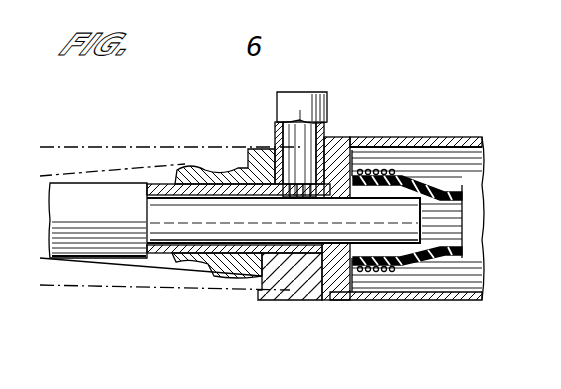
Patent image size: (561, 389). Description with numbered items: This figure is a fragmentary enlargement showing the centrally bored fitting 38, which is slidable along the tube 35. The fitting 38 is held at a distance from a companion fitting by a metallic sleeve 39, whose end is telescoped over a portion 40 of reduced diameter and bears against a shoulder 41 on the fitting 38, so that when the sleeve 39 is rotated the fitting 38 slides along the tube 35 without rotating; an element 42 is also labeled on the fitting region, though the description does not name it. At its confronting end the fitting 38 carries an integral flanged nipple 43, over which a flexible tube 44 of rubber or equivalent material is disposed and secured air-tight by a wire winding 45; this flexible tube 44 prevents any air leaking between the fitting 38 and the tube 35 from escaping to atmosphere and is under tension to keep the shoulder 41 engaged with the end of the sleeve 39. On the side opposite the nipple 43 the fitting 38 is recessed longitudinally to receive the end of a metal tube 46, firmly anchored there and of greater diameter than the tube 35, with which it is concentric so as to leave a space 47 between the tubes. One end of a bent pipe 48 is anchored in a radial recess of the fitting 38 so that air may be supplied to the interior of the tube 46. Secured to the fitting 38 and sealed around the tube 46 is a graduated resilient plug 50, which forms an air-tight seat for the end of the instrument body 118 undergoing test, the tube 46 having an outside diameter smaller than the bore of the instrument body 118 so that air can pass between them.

The instrument body 118 is at (116, 146).
The metal tube 46 is at (85, 260).
The space 47 is at (172, 187).
The graduated resilient plug 50 is at (233, 168).
The bent pipe 48 is at (287, 101).
The nut 42 is at (299, 186).
The portion of reduced diameter 40 is at (341, 158).
The shoulder 41 is at (336, 150).
The metallic sleeve 39 is at (466, 140).
The flexible tube 44 is at (462, 182).
The wire winding 45 is at (382, 174).
The flanged nipple 43 is at (405, 262).
The tube 35 is at (210, 230).
The fitting 38 is at (287, 274).